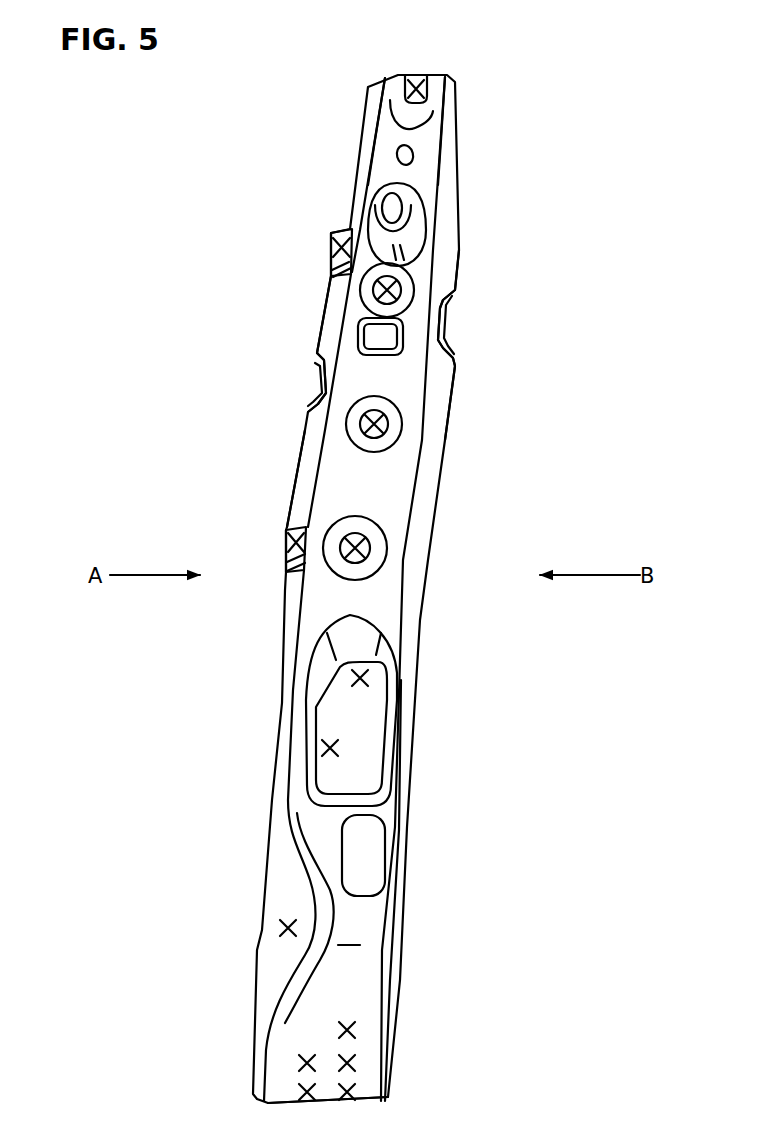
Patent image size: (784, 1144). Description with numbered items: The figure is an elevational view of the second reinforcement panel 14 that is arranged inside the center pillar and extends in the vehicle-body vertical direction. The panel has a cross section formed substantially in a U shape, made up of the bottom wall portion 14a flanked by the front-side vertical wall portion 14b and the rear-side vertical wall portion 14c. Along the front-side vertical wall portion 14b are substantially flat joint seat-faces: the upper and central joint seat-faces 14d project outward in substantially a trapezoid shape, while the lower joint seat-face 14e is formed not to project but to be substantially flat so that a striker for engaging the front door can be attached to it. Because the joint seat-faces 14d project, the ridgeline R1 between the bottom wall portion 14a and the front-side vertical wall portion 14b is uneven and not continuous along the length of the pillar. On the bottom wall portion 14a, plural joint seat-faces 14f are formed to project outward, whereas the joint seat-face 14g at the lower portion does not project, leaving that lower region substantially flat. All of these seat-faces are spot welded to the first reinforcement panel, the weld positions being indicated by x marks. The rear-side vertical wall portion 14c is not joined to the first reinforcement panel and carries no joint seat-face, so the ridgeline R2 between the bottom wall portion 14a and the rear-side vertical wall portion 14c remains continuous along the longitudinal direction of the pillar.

The second reinforcement panel 14 is at (319, 61).
The bottom wall portion 14a is at (400, 484).
The front-side vertical wall portion 14b is at (305, 472).
The rear-side vertical wall portion 14c is at (428, 530).
The joint seat-face 14d is at (323, 253).
The joint seat-face 14e is at (279, 960).
The joint seat-face 14f is at (421, 69).
The joint seat-face 14g is at (391, 1034).
The ridgeline R1 is at (360, 153).
The ridgeline R2 is at (447, 152).